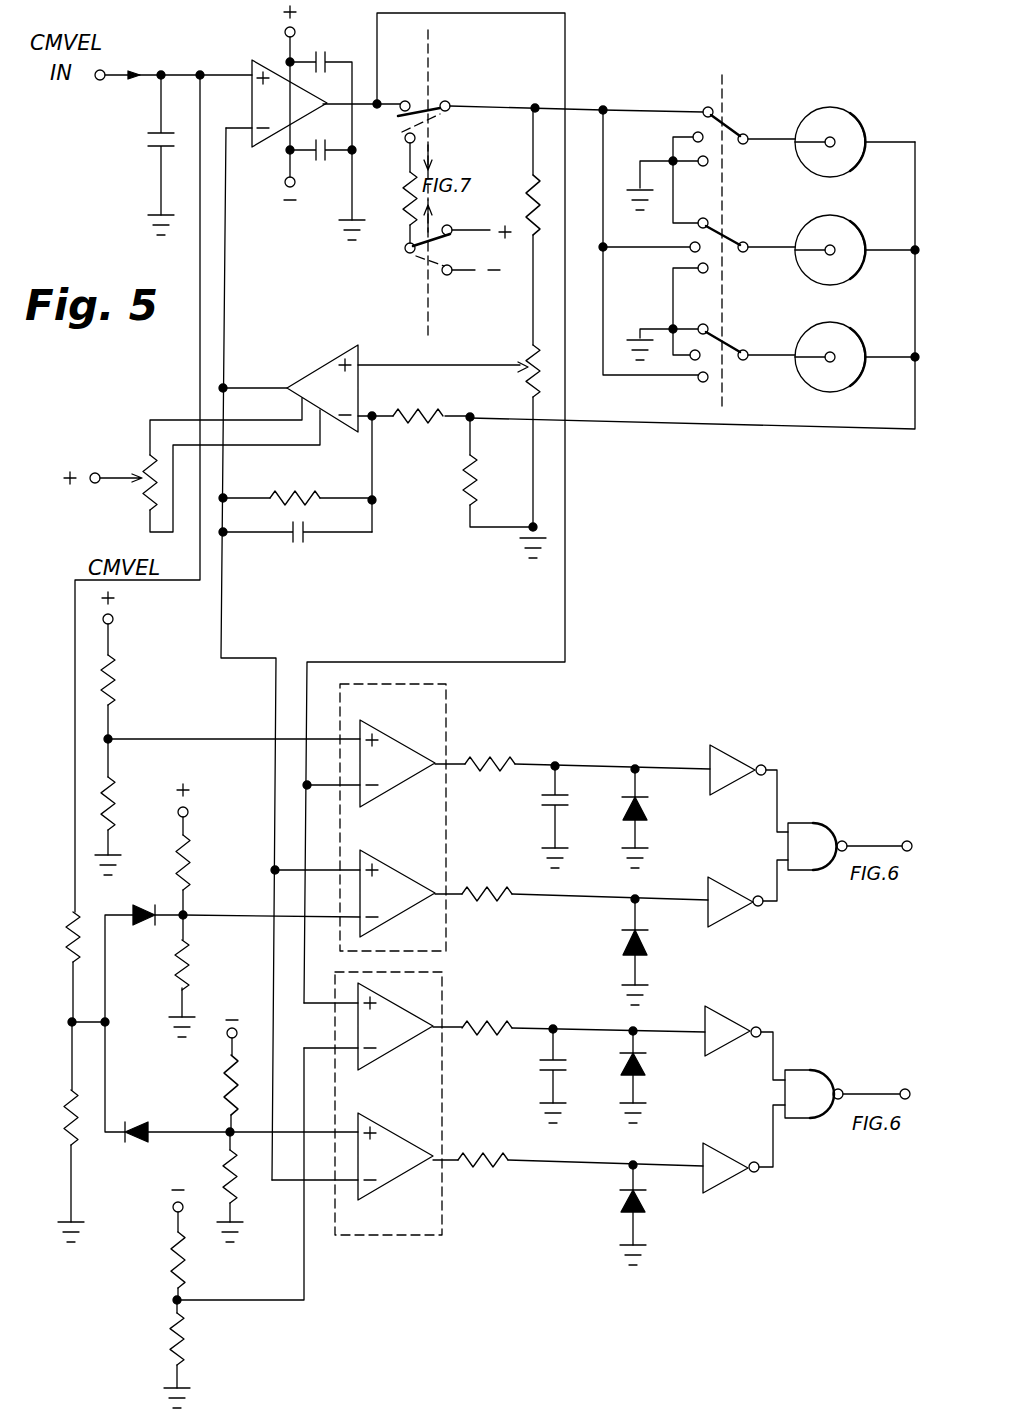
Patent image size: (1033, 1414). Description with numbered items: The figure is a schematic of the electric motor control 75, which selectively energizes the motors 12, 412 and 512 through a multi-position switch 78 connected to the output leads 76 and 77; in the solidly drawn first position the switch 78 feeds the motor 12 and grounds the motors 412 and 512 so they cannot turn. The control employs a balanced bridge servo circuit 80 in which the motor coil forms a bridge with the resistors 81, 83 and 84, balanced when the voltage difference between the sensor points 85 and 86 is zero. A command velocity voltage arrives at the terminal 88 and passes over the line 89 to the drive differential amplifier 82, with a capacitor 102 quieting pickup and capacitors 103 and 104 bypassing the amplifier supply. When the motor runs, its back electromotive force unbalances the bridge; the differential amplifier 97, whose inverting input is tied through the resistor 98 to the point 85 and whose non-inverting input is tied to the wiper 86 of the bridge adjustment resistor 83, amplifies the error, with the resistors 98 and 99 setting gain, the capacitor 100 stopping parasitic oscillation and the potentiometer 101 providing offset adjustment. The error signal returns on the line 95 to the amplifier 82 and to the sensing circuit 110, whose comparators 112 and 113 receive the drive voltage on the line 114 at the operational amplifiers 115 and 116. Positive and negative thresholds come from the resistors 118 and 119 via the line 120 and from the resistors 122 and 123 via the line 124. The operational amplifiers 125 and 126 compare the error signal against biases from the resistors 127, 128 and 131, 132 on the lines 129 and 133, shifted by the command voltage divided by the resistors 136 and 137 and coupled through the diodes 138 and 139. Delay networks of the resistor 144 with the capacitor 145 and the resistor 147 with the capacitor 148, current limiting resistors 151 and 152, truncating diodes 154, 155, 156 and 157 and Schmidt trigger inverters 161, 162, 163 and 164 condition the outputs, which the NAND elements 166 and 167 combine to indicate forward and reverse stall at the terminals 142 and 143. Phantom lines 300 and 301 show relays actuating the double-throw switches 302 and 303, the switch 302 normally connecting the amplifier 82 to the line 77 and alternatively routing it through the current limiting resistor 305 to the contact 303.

The motor 12 is at (833, 107).
The motor 412 is at (842, 214).
The motor 512 is at (843, 321).
The motor control 75 is at (565, 298).
The motor control output lead 76 is at (640, 426).
The motor control output lead 77 is at (589, 108).
The multi-position switch 78 is at (752, 106).
The balanced bridge servo circuit 80 is at (432, 516).
The resistor 81 is at (530, 192).
The differential amplifier 82 is at (256, 60).
The bridge adjustment resistor 83 is at (521, 353).
The resistor 84 is at (477, 486).
The sensor point 85 is at (466, 414).
The wiper 86 is at (520, 376).
The terminal 88 is at (105, 82).
The line 89 is at (195, 70).
The line 95 is at (226, 268).
The differential amplifier 97 is at (322, 364).
The resistor 98 is at (432, 424).
The resistor 99 is at (316, 480).
The capacitor 100 is at (304, 542).
The potentiometer 101 is at (145, 462).
The capacitor 102 is at (160, 150).
The capacitor 103 is at (318, 44).
The capacitor 104 is at (316, 166).
The sensing circuit 110 is at (540, 981).
The comparator 112 is at (446, 714).
The comparator 113 is at (377, 1235).
The line 114 is at (565, 574).
The operational amplifier 115 is at (388, 800).
The operational amplifier 116 is at (378, 1054).
The resistor 118 is at (118, 680).
The resistor 119 is at (114, 803).
The line 120 is at (243, 738).
The resistor 122 is at (172, 1268).
The resistor 123 is at (170, 1350).
The line 124 is at (228, 1303).
The operational amplifier 125 is at (393, 908).
The operational amplifier 126 is at (381, 1184).
The resistor 127 is at (190, 860).
The resistor 128 is at (190, 963).
The line 129 is at (253, 915).
The resistor 131 is at (222, 1083).
The resistor 132 is at (237, 1204).
The line 133 is at (200, 1136).
The resistor 136 is at (69, 930).
The resistor 137 is at (63, 1130).
The forwardly poled diode 138 is at (160, 944).
The reversely poled diode 139 is at (142, 1147).
The terminal 142 is at (905, 838).
The terminal 143 is at (903, 1086).
The resistor 144 is at (473, 772).
The capacitor 145 is at (565, 802).
The resistor 147 is at (497, 1040).
The capacitor 148 is at (567, 1078).
The resistor 151 is at (494, 896).
The resistor 152 is at (479, 1168).
The diode 154 is at (648, 815).
The diode 155 is at (648, 947).
The diode 156 is at (641, 1068).
The diode 157 is at (619, 1213).
The Schmidt trigger inverter 161 is at (733, 752).
The Schmidt trigger inverter 162 is at (755, 884).
The Schmidt trigger inverter 163 is at (733, 992).
The Schmidt trigger inverter 164 is at (750, 1201).
The NAND element 166 is at (818, 858).
The NAND element 167 is at (815, 1106).
The phantom line 300 is at (430, 72).
The phantom line 301 is at (424, 312).
The double-throw switch 302 is at (449, 100).
The double-throw switch 303 is at (420, 262).
The current limiting resistor 305 is at (403, 207).